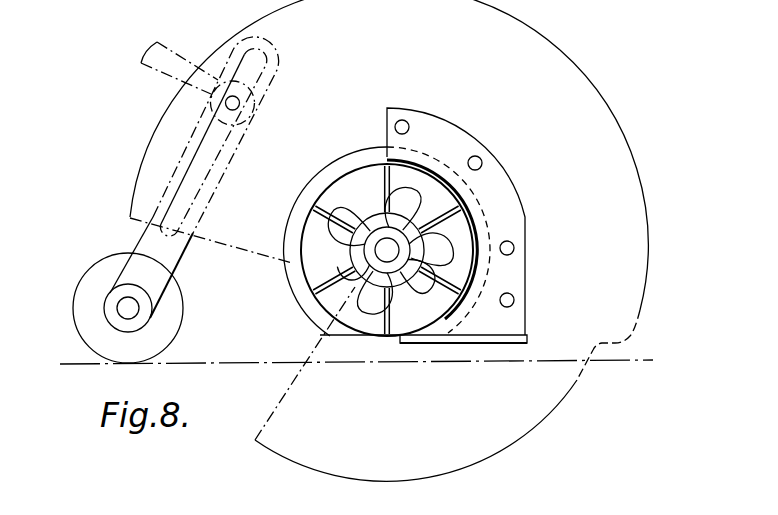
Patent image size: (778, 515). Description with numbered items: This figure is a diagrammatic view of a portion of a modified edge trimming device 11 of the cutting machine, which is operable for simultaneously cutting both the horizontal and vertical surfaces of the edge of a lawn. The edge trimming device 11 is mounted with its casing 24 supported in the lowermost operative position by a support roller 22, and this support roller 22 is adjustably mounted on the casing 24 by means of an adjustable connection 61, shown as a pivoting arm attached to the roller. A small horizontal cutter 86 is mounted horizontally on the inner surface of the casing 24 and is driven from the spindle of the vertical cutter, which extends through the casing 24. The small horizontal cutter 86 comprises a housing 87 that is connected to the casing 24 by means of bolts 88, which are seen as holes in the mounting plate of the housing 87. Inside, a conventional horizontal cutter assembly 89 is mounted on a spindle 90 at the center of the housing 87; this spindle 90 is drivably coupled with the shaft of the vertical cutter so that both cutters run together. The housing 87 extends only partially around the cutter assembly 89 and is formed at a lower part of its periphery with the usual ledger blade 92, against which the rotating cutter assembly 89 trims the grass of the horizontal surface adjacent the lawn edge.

The edge trimming device 11 is at (549, 30).
The support roller 22 is at (114, 260).
The casing 24 is at (597, 98).
The adjustable connection 61 is at (214, 68).
The small horizontal cutter 86 is at (282, 212).
The housing 87 is at (352, 156).
The bolts 88 is at (482, 159).
The horizontal cutter assembly 89 is at (345, 278).
The spindle 90 is at (398, 250).
The ledger blade 92 is at (430, 344).